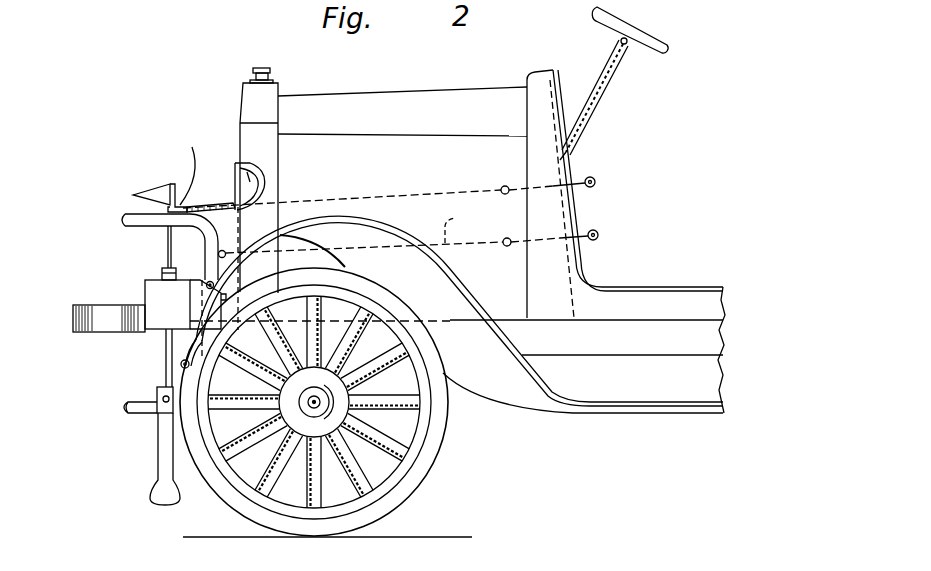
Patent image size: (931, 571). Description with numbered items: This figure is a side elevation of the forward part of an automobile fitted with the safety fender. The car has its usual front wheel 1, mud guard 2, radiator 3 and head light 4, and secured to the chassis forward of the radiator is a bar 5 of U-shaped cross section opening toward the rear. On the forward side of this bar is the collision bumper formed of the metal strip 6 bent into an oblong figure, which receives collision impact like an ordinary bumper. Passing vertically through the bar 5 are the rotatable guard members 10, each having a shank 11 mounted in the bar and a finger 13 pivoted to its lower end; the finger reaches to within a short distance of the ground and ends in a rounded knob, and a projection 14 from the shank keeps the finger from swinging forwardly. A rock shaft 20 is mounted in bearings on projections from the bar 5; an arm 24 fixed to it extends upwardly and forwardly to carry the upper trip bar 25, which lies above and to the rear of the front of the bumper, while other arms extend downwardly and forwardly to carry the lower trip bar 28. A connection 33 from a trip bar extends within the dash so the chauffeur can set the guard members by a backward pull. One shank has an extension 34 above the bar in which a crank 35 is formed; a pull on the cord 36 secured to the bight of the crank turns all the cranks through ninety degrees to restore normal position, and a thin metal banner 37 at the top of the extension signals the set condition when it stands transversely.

The front wheel 1 is at (447, 440).
The mud guard 2 is at (461, 286).
The radiator 3 is at (258, 135).
The head light 4 is at (250, 175).
The bar 5 is at (148, 286).
The metal strip 6 is at (74, 322).
The vertical guard member 10 is at (164, 341).
The shank 11 is at (164, 357).
The finger 13 is at (160, 462).
The projection 14 is at (158, 410).
The rock shaft 20 is at (214, 283).
The arm 24 is at (204, 265).
The trip bar 25 is at (124, 220).
The trip bar 28 is at (121, 405).
The connection 33 is at (463, 225).
The extension 34 is at (167, 254).
The crank 35 is at (181, 170).
The cord 36 is at (210, 205).
The metal banner 37 is at (162, 193).